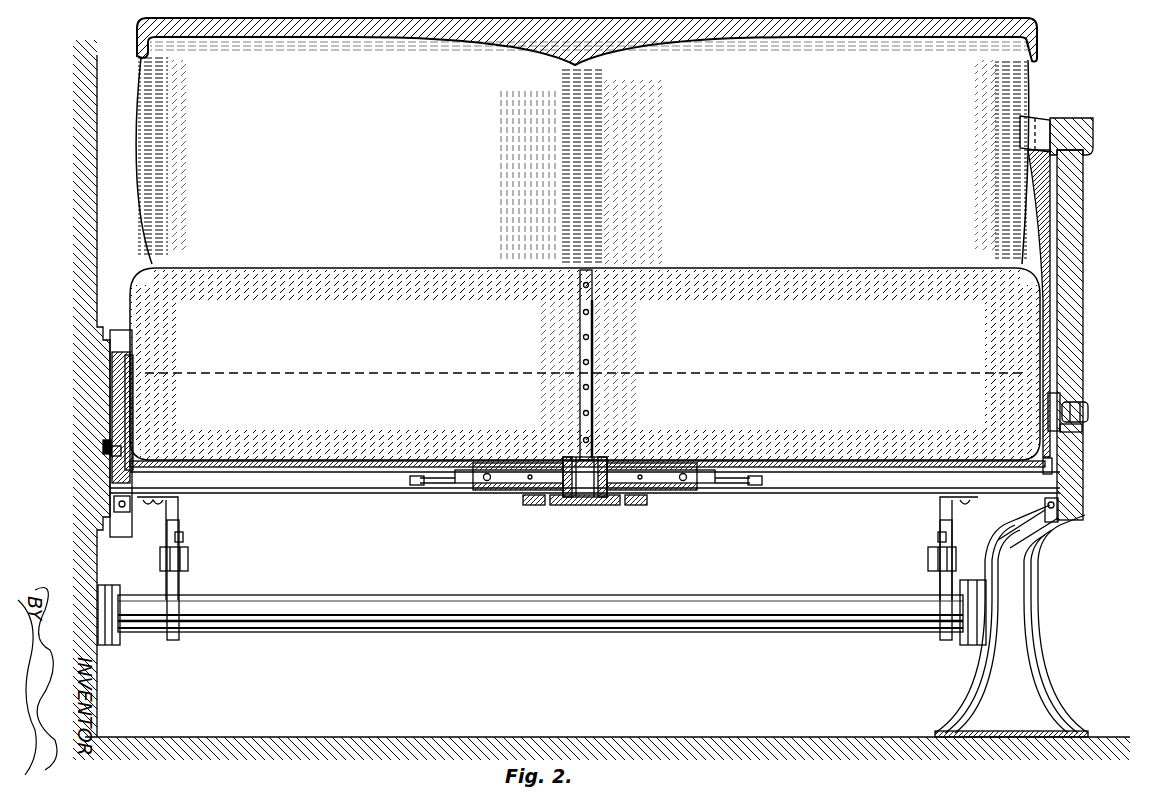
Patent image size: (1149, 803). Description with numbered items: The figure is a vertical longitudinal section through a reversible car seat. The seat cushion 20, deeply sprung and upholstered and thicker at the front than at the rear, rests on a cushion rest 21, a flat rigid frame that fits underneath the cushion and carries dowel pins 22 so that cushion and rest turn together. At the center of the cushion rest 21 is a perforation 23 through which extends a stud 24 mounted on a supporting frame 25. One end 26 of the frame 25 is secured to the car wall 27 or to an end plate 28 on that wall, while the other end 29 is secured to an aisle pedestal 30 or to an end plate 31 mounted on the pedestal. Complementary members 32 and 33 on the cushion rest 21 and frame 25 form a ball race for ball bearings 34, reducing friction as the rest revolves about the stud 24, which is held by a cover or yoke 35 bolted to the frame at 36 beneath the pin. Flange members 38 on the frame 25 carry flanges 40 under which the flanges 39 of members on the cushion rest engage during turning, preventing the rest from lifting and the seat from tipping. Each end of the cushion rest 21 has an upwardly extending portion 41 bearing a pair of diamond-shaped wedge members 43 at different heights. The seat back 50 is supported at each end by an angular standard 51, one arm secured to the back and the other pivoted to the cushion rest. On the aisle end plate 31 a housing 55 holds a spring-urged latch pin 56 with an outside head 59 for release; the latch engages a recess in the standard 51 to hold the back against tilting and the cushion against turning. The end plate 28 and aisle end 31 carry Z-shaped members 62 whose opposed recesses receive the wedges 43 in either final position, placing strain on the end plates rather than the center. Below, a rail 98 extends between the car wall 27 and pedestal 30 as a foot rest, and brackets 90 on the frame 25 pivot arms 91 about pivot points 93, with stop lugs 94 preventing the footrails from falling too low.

The seat cushion 20 is at (815, 264).
The cushion rest 21 is at (785, 484).
The dowel pins 22 is at (195, 468).
The perforation 23 is at (552, 465).
The stud 24 is at (606, 458).
The frame 25 is at (432, 486).
The end of frame 26 is at (113, 505).
The car wall 27 is at (88, 565).
The end plate 28 is at (108, 482).
The end of frame 29 is at (1060, 512).
The aisle pedestal 30 is at (1032, 562).
The end plate 31 is at (1085, 356).
The complementary member 32 is at (500, 470).
The complementary member 33 is at (503, 492).
The ball bearings 34 is at (490, 492).
The cover or yoke 35 is at (578, 506).
The bolts 36 is at (534, 507).
The complementary flange members 38 is at (420, 478).
The flanges 39 is at (463, 492).
The flanges 40 is at (615, 404).
The upwardly extending portions 41 is at (128, 376).
The wedge members 43 is at (110, 458).
The seat back 50 is at (552, 88).
The angular standard 51 is at (975, 322).
The housing 55 is at (1080, 430).
The latch pin 56 is at (1062, 400).
The head 59 is at (1090, 412).
The Z-shaped members 62 is at (102, 444).
The brackets 90 is at (180, 512).
The arm 91 is at (181, 578).
The pivot point 93 is at (190, 556).
The stop lugs 94 is at (184, 535).
The rail 98 is at (542, 632).